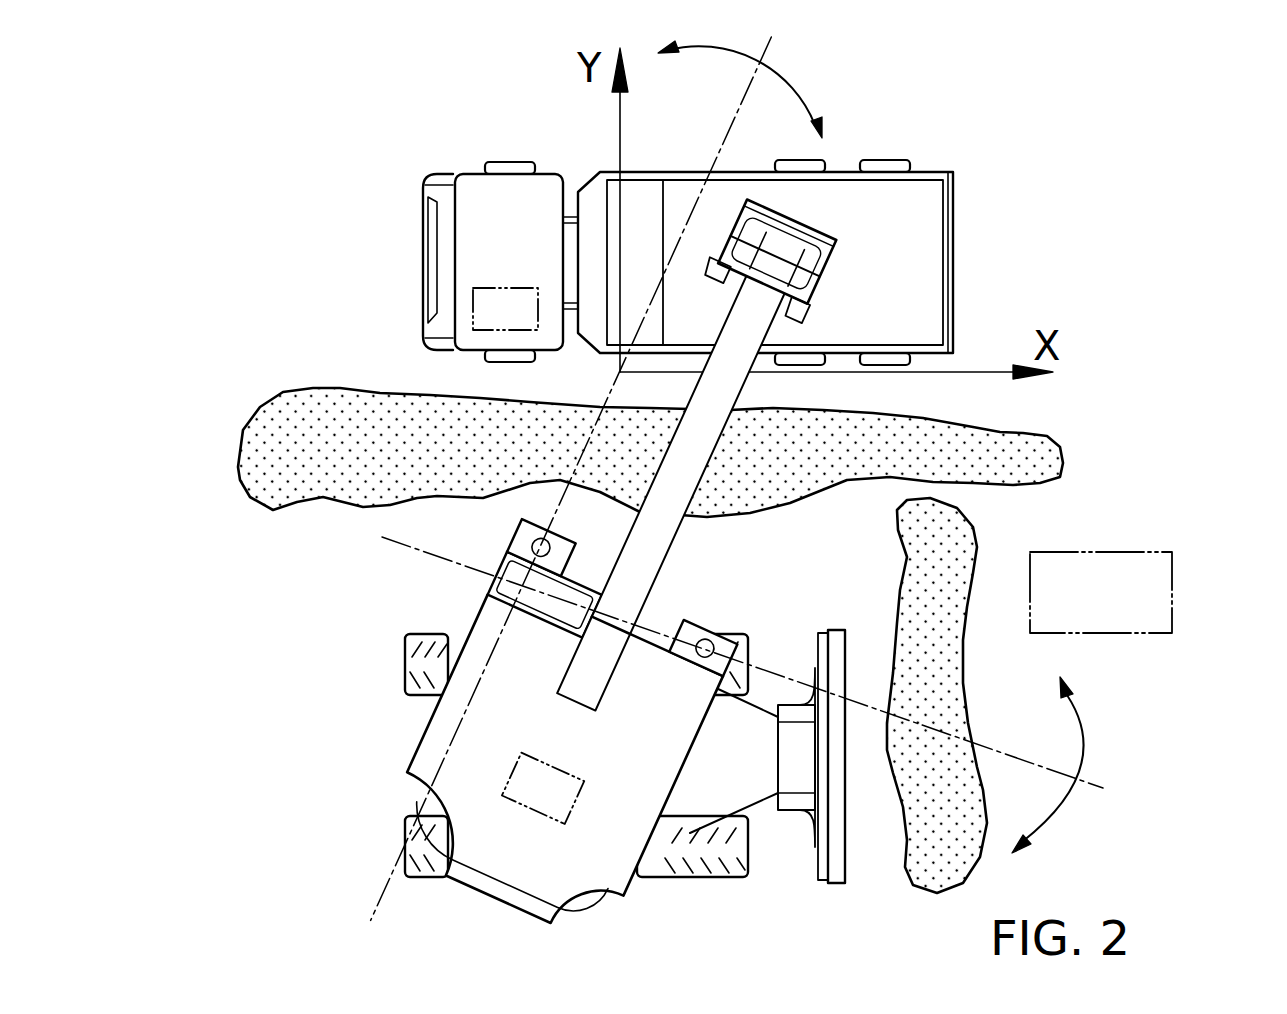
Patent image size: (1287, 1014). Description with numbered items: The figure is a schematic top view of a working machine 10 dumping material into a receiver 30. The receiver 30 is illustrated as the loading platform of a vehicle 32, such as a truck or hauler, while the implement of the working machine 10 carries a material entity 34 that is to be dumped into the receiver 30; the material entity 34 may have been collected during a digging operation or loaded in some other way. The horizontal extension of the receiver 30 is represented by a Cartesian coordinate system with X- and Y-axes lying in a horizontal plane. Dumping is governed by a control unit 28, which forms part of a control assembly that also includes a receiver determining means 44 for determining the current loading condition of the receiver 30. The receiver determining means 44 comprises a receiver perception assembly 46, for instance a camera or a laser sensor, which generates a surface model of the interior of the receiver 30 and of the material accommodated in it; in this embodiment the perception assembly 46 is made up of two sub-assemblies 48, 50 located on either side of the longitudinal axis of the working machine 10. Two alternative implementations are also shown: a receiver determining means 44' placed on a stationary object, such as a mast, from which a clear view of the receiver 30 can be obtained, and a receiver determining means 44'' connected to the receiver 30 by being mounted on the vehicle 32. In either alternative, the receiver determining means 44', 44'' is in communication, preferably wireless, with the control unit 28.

The working machine 10 is at (270, 688).
The control unit 28 is at (503, 797).
The receiver 30 is at (937, 172).
The vehicle 32 is at (368, 128).
The material entity 34 is at (826, 232).
The receiver determining means 44 is at (459, 605).
The receiver determining means 44' is at (1150, 584).
The receiver determining means 44'' is at (430, 289).
The receiver perception assembly 46 is at (437, 583).
The sub-assembly 48 is at (512, 524).
The sub-assembly 50 is at (706, 640).